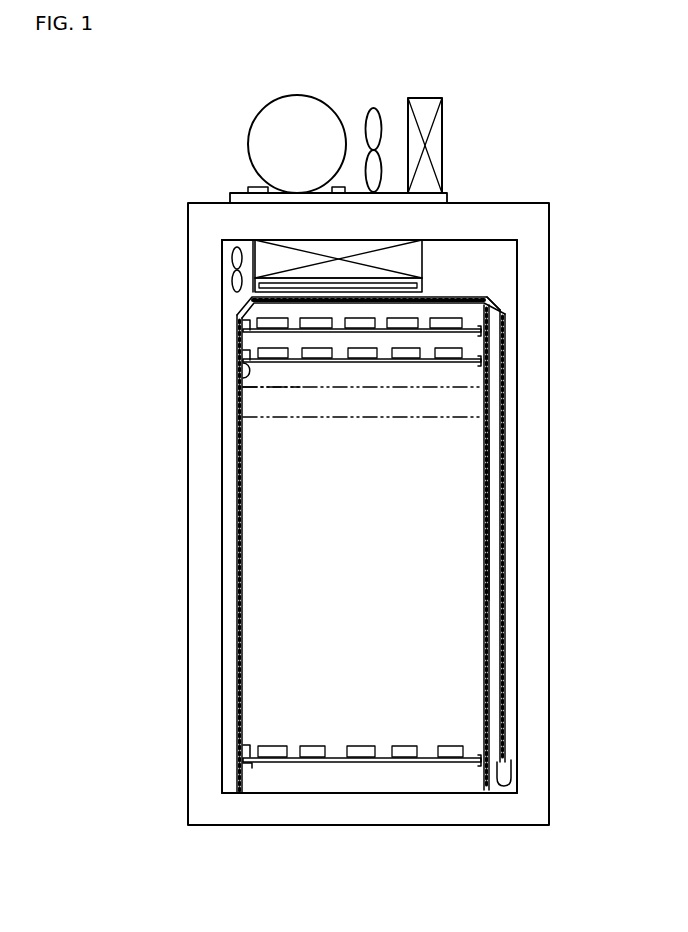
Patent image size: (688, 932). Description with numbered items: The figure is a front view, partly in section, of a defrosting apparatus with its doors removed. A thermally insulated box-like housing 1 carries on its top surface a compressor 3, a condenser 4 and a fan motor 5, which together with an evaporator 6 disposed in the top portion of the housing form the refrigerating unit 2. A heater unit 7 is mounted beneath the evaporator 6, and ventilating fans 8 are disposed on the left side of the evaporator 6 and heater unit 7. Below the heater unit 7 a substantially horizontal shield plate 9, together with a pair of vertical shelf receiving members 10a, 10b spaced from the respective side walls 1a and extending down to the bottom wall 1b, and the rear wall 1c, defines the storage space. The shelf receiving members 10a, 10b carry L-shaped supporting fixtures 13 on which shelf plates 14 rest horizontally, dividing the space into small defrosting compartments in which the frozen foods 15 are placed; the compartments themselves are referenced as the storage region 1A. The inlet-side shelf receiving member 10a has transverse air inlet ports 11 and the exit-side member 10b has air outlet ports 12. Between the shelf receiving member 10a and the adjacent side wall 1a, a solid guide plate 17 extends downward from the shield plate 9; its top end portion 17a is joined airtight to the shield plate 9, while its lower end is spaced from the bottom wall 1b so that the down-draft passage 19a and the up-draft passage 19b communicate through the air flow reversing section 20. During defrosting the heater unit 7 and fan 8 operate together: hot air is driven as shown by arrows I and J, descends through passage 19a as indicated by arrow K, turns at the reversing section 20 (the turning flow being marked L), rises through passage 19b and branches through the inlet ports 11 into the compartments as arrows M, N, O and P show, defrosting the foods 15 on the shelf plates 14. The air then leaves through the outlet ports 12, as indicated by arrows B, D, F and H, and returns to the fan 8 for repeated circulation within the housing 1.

The housing 1 is at (510, 205).
The side wall 1a is at (227, 479).
The bottom wall 1b is at (438, 791).
The rear wall 1c is at (503, 272).
The storage compartment 1A is at (240, 392).
The refrigerating unit 2 is at (456, 124).
The compressor 3 is at (300, 100).
The condenser 4 is at (436, 98).
The fan motor 5 is at (373, 110).
The evaporator 6 is at (262, 240).
The heater unit 7 is at (412, 283).
The ventilating fan 8 is at (230, 258).
The shield plate 9 is at (509, 312).
The shelf receiving member 10a is at (488, 580).
The shelf receiving member 10b is at (237, 547).
The air inlet port 11 is at (479, 372).
The air outlet port 12 is at (238, 362).
The supporting fixture 13 is at (248, 765).
The shelf plate 14 is at (387, 333).
The frozen food 15 is at (276, 356).
The guide plate 17 is at (503, 435).
The top end portion 17a is at (494, 300).
The air down-draft passage 19a is at (512, 527).
The air up-draft passage 19b is at (493, 490).
The air flow reversing section 20 is at (507, 787).
The arrow B is at (224, 308).
The arrow D is at (222, 336).
The arrow F is at (240, 370).
The arrow H is at (226, 732).
The arrow I is at (446, 268).
The arrow J is at (507, 305).
The arrow K is at (512, 705).
The air flow point L is at (510, 777).
The arrow M is at (478, 745).
The arrow N is at (476, 373).
The arrow O is at (476, 347).
The arrow P is at (474, 317).